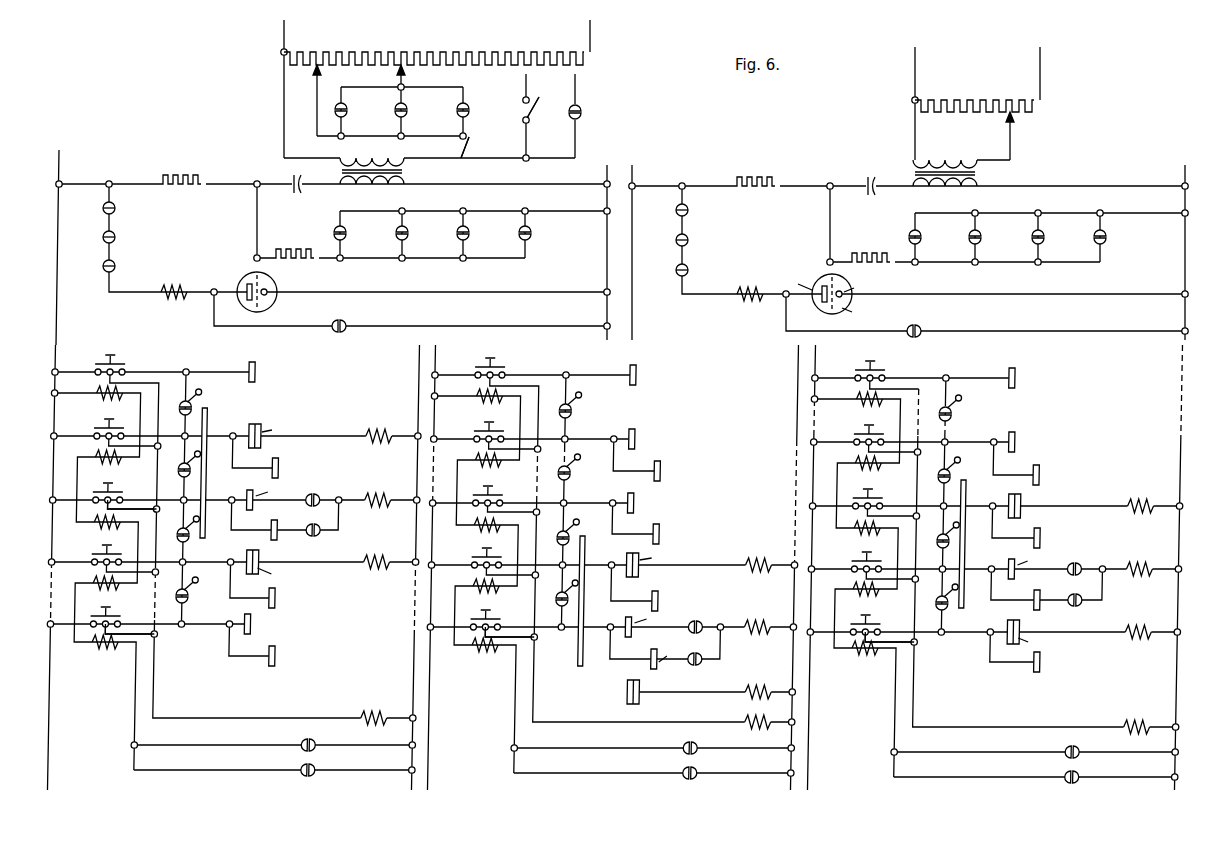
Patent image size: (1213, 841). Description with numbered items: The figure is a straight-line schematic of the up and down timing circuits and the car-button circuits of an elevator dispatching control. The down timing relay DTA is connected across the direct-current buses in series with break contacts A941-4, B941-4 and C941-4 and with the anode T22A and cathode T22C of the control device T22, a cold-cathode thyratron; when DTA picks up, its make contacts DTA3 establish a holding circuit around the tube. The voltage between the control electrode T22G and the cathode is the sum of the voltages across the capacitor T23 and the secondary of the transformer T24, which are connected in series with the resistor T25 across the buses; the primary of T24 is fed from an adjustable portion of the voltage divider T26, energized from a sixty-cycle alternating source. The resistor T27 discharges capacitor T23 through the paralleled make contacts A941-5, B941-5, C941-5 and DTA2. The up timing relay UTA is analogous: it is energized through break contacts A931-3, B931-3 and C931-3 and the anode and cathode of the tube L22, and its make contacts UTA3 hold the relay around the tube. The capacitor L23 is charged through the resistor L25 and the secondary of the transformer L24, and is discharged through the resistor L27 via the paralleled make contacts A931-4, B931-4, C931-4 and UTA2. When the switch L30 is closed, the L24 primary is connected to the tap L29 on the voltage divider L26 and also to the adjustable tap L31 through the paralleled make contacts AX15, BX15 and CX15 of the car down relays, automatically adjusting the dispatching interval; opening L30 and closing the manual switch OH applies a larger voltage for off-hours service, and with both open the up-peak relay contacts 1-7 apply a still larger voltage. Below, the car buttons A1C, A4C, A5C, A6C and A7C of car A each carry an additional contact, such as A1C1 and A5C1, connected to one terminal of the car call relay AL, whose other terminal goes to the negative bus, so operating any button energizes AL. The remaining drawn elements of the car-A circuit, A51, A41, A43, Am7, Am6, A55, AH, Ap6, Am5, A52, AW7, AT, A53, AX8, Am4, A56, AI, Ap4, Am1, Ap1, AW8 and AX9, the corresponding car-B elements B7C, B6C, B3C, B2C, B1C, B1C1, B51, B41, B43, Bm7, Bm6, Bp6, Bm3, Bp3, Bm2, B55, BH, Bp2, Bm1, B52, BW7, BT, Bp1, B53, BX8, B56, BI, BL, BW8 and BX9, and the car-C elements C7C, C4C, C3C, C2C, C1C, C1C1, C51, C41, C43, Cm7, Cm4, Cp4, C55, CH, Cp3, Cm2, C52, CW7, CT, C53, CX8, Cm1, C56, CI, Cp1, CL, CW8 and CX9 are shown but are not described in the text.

The voltage divider L26 is at (462, 52).
The tap L29 is at (328, 80).
The adjustable tap L31 is at (408, 80).
The make contacts AX15 is at (361, 104).
The make contacts BX15 is at (421, 104).
The make contacts CX15 is at (484, 104).
The manually operated switch OH is at (523, 118).
The make contacts of the up peak relay 1-7 is at (571, 114).
The switch L30 is at (470, 150).
The transformer L24 is at (412, 178).
The resistor L25 is at (180, 171).
The capacitor L23 is at (282, 178).
The break contacts A931-3 is at (140, 209).
The break contacts B931-3 is at (140, 238).
The break contacts C931-3 is at (140, 267).
The resistor L27 is at (293, 245).
The make contacts A931-4 is at (344, 223).
The make contacts B931-4 is at (404, 244).
The make contacts C931-4 is at (466, 225).
The make contacts UTA2 is at (532, 236).
The control device L22 is at (244, 277).
The up timing relay UTA is at (158, 303).
The make contacts UTA3 is at (338, 325).
The voltage divider T26 is at (948, 94).
The transformer T24 is at (984, 180).
The resistor T25 is at (754, 173).
The capacitor T23 is at (862, 184).
The break contacts A941-4 is at (713, 211).
The break contacts B941-4 is at (713, 241).
The break contacts C941-4 is at (713, 271).
The resistor T27 is at (869, 249).
The make contacts A941-5 is at (909, 225).
The make contacts B941-5 is at (979, 247).
The make contacts C941-5 is at (1035, 225).
The make contacts DTA2 is at (1107, 240).
The control device T22 is at (816, 279).
The anode T22A is at (783, 284).
The cathode T22C is at (869, 286).
The control electrode T22G is at (869, 317).
The down timing relay DTA is at (743, 306).
The make contacts DTA3 is at (917, 331).
The car button A7C is at (122, 367).
The car button A6C is at (92, 430).
The car button A5C is at (104, 486).
The car button A4C is at (100, 568).
The car button A1C is at (102, 618).
The additional contact A5C1 is at (108, 516).
The additional contact A1C1 is at (106, 640).
The relay coil A51 is at (107, 652).
The selector contacts A41 is at (201, 388).
The selector bar A43 is at (208, 418).
The magnet Am7 is at (256, 374).
The magnet Am6 is at (250, 428).
The armature A55 is at (283, 429).
The resistor AH is at (372, 434).
The plate Ap6 is at (282, 470).
The magnet Am5 is at (246, 496).
The armature A52 is at (278, 491).
The rectifier AW7 is at (316, 494).
The resistor AT is at (374, 498).
The armature A53 is at (286, 524).
The rectifier AX8 is at (315, 540).
The magnet Am4 is at (248, 564).
The armature A56 is at (280, 575).
The resistor AI is at (374, 560).
The plate Ap4 is at (280, 600).
The magnet Am1 is at (256, 626).
The plate Ap1 is at (282, 660).
The car call relay AL is at (374, 716).
The rectifier AW8 is at (319, 742).
The rectifier AX9 is at (317, 766).
The relay contact B7C is at (500, 369).
The relay contact B6C is at (472, 434).
The relay contact B3C is at (484, 490).
The relay contact B2C is at (474, 562).
The relay contact B1C is at (482, 622).
The relay contact B1C1 is at (486, 644).
The relay coil B51 is at (490, 656).
The selector contacts B41 is at (578, 406).
The selector bar B43 is at (583, 664).
The magnet Bm7 is at (640, 378).
The magnet Bm6 is at (640, 442).
The plate Bp6 is at (665, 474).
The magnet Bm3 is at (640, 506).
The plate Bp3 is at (665, 536).
The magnet Bm2 is at (628, 562).
The armature B55 is at (662, 557).
The resistor BH is at (756, 564).
The plate Bp2 is at (666, 602).
The magnet Bm1 is at (628, 626).
The armature B52 is at (656, 619).
The rectifier BW7 is at (699, 622).
The resistor BT is at (756, 624).
The plate Bp1 is at (650, 662).
The armature B53 is at (678, 651).
The rectifier BX8 is at (697, 666).
The armature B56 is at (632, 694).
The resistor BI is at (760, 683).
The resistor BL is at (756, 715).
The rectifier BW8 is at (699, 742).
The rectifier BX9 is at (699, 768).
The relay contact C7C is at (882, 371).
The relay contact C4C is at (852, 438).
The relay contact C3C is at (864, 496).
The relay contact C2C is at (854, 566).
The relay contact C1C is at (864, 626).
The relay contact C1C1 is at (866, 644).
The relay coil C51 is at (871, 656).
The selector contacts C41 is at (957, 412).
The selector bar C43 is at (972, 494).
The magnet Cm7 is at (1018, 382).
The magnet Cm4 is at (1019, 446).
The plate Cp4 is at (1044, 478).
The armature C55 is at (1022, 502).
The resistor CH is at (1137, 504).
The plate Cp3 is at (1045, 540).
The magnet Cm2 is at (1010, 568).
The armature C52 is at (1037, 561).
The rectifier CW7 is at (1075, 564).
The resistor CT is at (1137, 566).
The armature C53 is at (1050, 594).
The rectifier CX8 is at (1074, 606).
The magnet Cm1 is at (1008, 632).
The armature C56 is at (1038, 647).
The resistor CI is at (1137, 630).
The plate Cp1 is at (1047, 664).
The resistor CL is at (1137, 724).
The rectifier CW8 is at (1081, 746).
The rectifier CX9 is at (1081, 772).